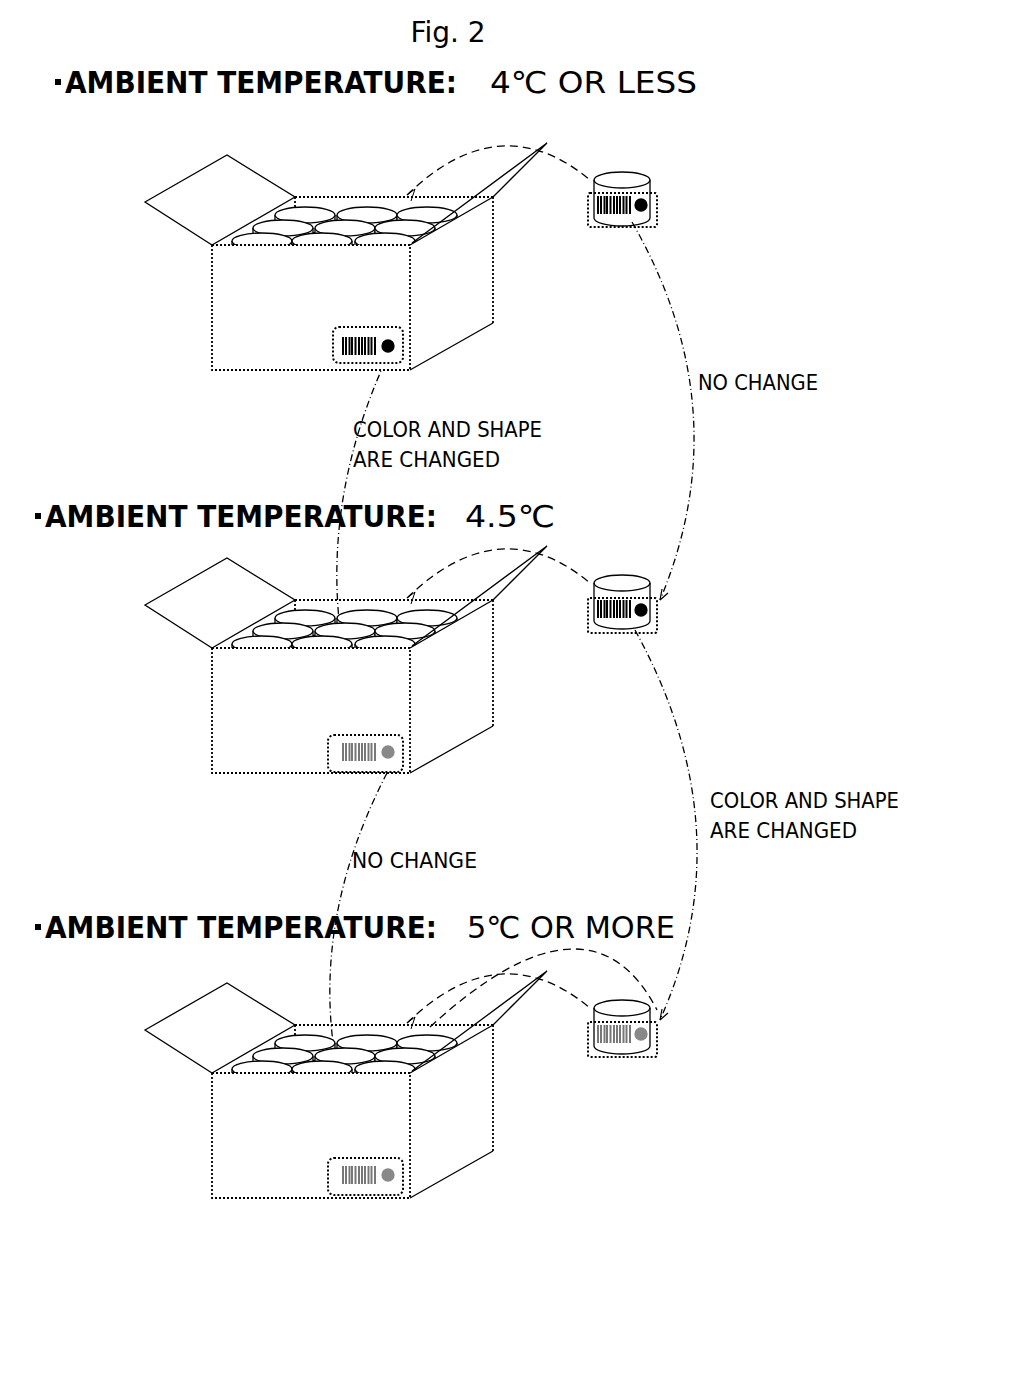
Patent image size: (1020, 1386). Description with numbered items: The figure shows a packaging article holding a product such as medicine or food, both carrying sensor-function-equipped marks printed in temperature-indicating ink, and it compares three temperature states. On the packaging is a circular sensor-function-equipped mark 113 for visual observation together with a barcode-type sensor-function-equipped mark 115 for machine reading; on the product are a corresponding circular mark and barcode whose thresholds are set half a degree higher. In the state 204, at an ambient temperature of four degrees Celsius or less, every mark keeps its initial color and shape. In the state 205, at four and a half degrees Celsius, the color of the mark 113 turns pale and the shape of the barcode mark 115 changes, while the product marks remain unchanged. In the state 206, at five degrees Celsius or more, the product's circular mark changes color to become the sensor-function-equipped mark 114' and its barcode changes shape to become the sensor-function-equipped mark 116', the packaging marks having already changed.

The sensor-function-equipped mark 113 is at (386, 367).
The sensor-function-equipped mark 114' is at (667, 1066).
The sensor-function-equipped mark 115 is at (319, 368).
The sensor-function-equipped mark 116' is at (626, 1067).
The state of the sensor-function-equipped marks 204 is at (415, 275).
The state of the sensor-function-equipped marks 205 is at (421, 679).
The state of the sensor-function-equipped marks 206 is at (418, 1093).